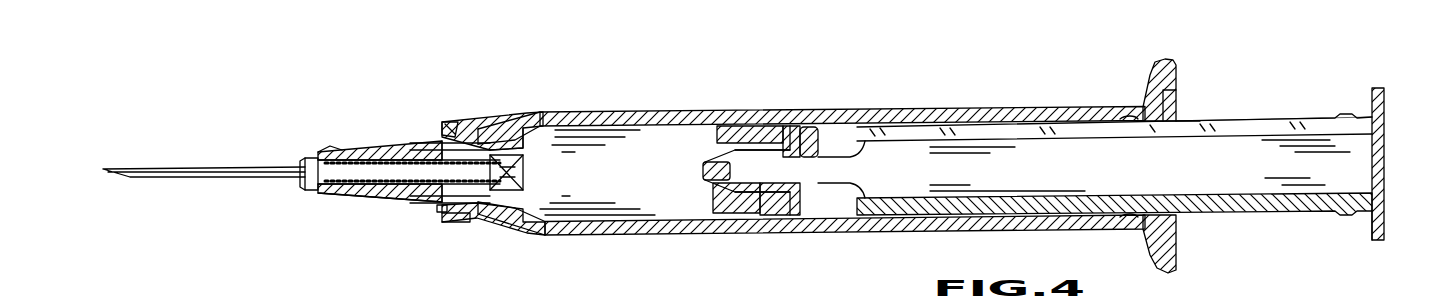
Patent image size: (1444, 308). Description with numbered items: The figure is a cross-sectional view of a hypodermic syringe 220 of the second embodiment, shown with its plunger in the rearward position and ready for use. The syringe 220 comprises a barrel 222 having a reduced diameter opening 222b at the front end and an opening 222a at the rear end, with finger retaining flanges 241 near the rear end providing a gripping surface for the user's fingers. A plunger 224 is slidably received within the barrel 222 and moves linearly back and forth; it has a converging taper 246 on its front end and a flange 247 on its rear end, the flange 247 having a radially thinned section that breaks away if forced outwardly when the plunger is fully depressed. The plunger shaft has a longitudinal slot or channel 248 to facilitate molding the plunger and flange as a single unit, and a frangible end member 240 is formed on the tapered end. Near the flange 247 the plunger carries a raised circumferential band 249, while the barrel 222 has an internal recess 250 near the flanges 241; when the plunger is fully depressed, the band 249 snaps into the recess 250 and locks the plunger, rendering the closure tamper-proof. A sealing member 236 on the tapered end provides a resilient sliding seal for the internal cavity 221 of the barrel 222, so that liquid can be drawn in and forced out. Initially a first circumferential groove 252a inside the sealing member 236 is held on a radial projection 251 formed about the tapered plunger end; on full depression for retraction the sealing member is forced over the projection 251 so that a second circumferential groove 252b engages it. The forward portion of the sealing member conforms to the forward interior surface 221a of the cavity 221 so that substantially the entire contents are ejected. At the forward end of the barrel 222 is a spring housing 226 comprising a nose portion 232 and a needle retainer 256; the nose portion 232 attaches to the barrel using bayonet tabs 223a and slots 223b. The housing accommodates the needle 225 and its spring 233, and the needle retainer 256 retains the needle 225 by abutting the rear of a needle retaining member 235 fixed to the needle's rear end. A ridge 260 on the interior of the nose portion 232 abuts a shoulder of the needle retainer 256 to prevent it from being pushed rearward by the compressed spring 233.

The syringe 220 is at (896, 90).
The internal cavity 221 is at (636, 178).
The forward interior surface 221a is at (525, 146).
The barrel 222 is at (672, 108).
The rear opening 222a is at (1177, 112).
The reduced diameter opening 222b is at (438, 222).
The bayonet tabs 223a is at (477, 120).
The slots 223b is at (452, 228).
The plunger 224 is at (1292, 108).
The needle 225 is at (207, 167).
The spring housing 226 is at (327, 143).
The nose portion 232 is at (327, 193).
The spring 233 is at (368, 192).
The needle retaining member 235 is at (520, 238).
The sealing member 236 is at (748, 138).
The frangible end member 240 is at (700, 183).
The finger retaining flanges 241 is at (1167, 60).
The converging taper 246 is at (708, 185).
The flange 247 is at (1425, 40).
The longitudinal slot or channel 248 is at (1257, 128).
The raised circumferential band 249 is at (1343, 242).
The internal recess 250 is at (1123, 118).
The radial projection 251 is at (803, 124).
The first circumferential groove 252a is at (770, 215).
The second circumferential groove 252b is at (735, 213).
The needle retainer 256 is at (447, 122).
The ridge 260 is at (447, 206).